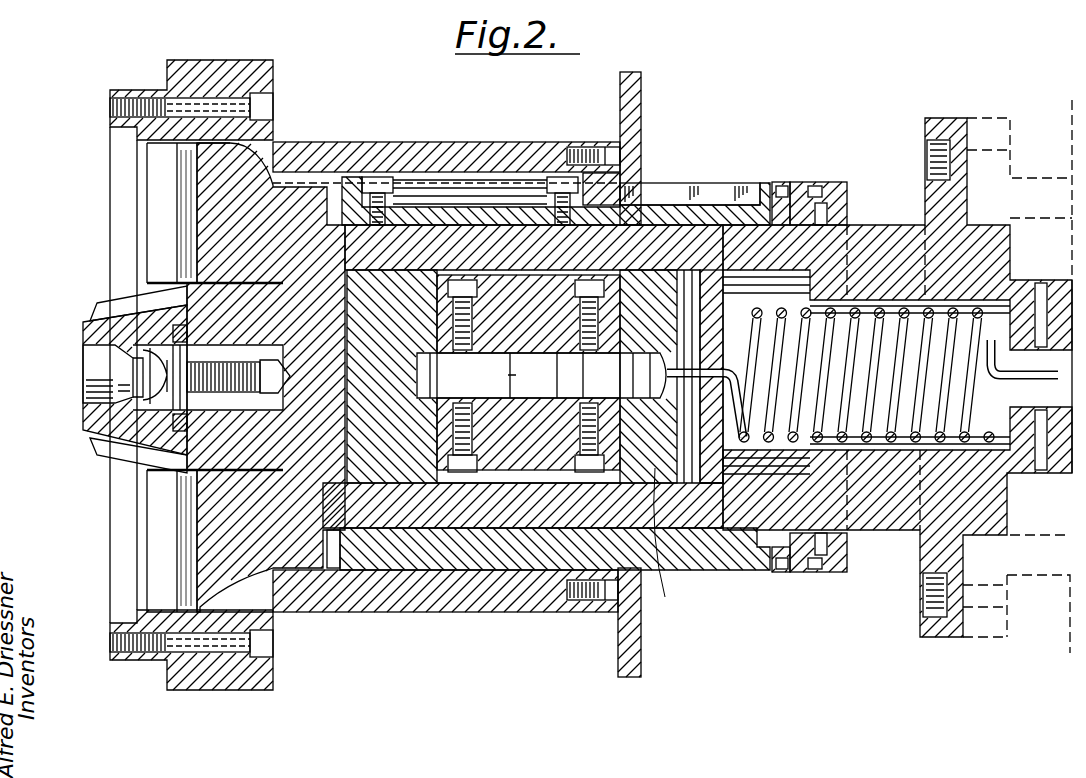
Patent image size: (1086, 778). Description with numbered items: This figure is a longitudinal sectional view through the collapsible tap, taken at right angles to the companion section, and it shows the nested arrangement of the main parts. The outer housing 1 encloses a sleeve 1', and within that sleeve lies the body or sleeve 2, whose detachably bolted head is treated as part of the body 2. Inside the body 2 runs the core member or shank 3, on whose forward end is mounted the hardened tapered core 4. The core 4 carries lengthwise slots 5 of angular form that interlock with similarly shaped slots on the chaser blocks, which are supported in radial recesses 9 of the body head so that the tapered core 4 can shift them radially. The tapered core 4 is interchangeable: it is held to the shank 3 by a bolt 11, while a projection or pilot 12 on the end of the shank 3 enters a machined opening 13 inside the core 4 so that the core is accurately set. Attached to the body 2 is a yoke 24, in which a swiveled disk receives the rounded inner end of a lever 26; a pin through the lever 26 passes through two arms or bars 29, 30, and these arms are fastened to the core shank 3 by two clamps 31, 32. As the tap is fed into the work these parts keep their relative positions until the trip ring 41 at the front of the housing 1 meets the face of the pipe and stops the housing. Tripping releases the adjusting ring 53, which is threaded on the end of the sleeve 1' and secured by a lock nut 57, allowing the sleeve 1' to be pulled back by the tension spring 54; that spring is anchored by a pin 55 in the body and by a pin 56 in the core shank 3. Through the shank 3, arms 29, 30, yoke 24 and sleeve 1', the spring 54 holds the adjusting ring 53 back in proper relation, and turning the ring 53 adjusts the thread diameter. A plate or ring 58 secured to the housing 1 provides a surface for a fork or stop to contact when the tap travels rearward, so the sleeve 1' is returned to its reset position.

The housing 1 is at (446, 379).
The sleeve 1' is at (664, 543).
The body or sleeve 2 is at (293, 190).
The core member or shank 3 is at (395, 207).
The hardened tapered core 4 is at (90, 410).
The slots 5 is at (133, 303).
The radial recesses 9 is at (180, 173).
The bolt 11 is at (97, 373).
The projection or pilot 12 is at (152, 410).
The machined opening 13 is at (110, 302).
The yoke 24 is at (820, 388).
The lever 26 is at (541, 375).
The arm or bar 29 is at (547, 443).
The arm or bar 30 is at (580, 288).
The clamp 31 is at (492, 290).
The clamp 32 is at (515, 455).
The trip ring 41 is at (152, 90).
The adjusting ring 53 is at (827, 180).
The tension spring 54 is at (913, 453).
The pin 55 is at (1042, 470).
The pin 56 is at (705, 482).
The lock nut 57 is at (787, 182).
The plate or ring 58 is at (638, 72).